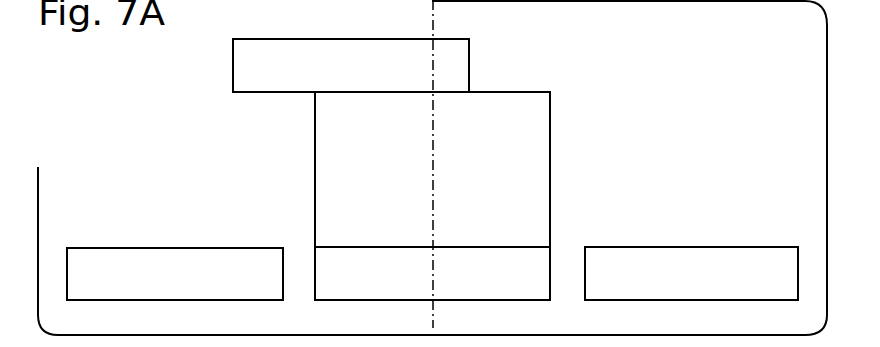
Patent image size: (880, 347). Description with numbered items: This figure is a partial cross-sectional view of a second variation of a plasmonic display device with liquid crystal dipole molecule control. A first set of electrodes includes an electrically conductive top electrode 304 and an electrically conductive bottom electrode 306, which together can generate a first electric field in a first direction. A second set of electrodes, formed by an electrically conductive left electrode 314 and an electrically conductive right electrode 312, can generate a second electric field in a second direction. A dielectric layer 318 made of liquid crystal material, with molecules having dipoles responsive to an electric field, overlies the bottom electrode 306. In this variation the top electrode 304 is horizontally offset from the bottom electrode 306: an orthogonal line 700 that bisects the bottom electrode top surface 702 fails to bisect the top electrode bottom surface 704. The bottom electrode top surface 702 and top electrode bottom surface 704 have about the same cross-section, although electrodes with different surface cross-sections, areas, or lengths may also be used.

The top electrode 304 is at (372, 74).
The dielectric layer 318 is at (418, 183).
The bottom electrode 306 is at (415, 284).
The left electrode 314 is at (195, 284).
The right electrode 312 is at (712, 283).
The orthogonal line 700 is at (436, 127).
The bottom electrode top surface 702 is at (517, 243).
The top electrode bottom surface 704 is at (367, 95).